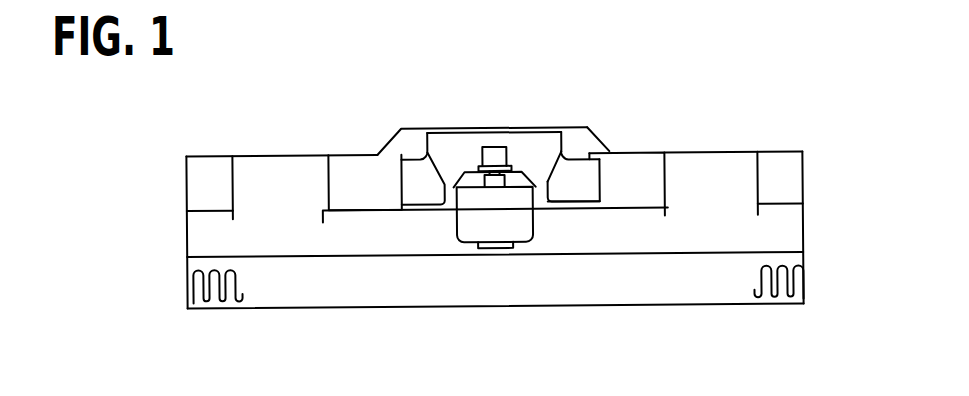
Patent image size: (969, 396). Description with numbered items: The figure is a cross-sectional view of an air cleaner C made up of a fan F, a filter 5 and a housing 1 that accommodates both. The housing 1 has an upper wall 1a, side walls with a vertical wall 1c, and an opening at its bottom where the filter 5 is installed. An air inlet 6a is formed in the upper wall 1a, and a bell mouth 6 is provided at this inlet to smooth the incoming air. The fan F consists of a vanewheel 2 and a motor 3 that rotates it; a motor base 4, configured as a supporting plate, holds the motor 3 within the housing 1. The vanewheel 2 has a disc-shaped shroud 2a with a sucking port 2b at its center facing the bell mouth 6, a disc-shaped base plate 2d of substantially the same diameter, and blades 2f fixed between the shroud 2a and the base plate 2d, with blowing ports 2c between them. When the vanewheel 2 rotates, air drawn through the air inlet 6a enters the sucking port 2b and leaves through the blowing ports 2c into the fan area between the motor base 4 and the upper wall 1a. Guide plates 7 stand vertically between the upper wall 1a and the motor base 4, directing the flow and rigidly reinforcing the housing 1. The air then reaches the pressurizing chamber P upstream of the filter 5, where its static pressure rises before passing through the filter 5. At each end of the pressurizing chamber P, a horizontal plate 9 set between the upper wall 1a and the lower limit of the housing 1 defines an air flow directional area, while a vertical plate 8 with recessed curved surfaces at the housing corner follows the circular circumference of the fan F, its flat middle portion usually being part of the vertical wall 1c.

The air cleaner C is at (242, 152).
The housing 1 is at (690, 152).
The upper wall 1a is at (728, 152).
The vertical wall 1c is at (805, 214).
The filter 5 is at (310, 306).
The vertical plate 8 is at (187, 181).
The horizontal plate 9 is at (218, 210).
The pressurizing chamber P is at (793, 241).
The fan F is at (436, 192).
The guide plate 7 is at (337, 154).
The vanewheel 2 is at (467, 138).
The blade 2f is at (422, 161).
The bell mouth 6 is at (387, 149).
The air inlet 6a is at (562, 127).
The sucking port 2b is at (568, 125).
The shroud 2a is at (568, 155).
The blowing port 2c is at (620, 163).
The base plate 2d is at (582, 205).
The motor 3 is at (522, 243).
The motor base 4 is at (572, 217).